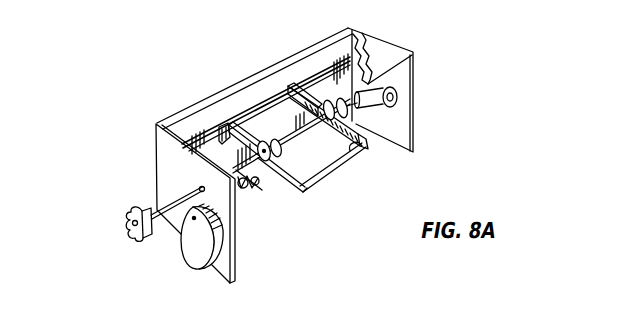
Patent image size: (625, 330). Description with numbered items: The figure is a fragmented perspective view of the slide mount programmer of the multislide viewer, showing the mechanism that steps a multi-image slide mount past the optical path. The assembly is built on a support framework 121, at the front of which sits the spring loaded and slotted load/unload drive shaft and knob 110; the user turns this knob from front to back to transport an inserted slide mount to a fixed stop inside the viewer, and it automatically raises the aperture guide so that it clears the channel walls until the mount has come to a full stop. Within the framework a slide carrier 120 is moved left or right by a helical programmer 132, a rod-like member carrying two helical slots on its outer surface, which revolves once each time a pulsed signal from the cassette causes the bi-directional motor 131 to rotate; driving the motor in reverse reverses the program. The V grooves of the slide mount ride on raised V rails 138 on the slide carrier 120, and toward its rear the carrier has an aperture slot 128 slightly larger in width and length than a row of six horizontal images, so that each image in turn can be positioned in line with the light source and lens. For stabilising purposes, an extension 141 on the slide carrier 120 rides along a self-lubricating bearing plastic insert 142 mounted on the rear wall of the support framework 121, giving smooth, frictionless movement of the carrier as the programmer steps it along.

The load/unload knob 110 is at (136, 232).
The slide carrier 120 is at (323, 165).
The support framework 121 is at (173, 171).
The aperture slot 128 is at (283, 102).
The motor 131 is at (196, 253).
The helical programmer 132 is at (262, 185).
The raised V rails 138 is at (340, 186).
The extension 141 is at (226, 144).
The bearing plastic insert 142 is at (208, 124).